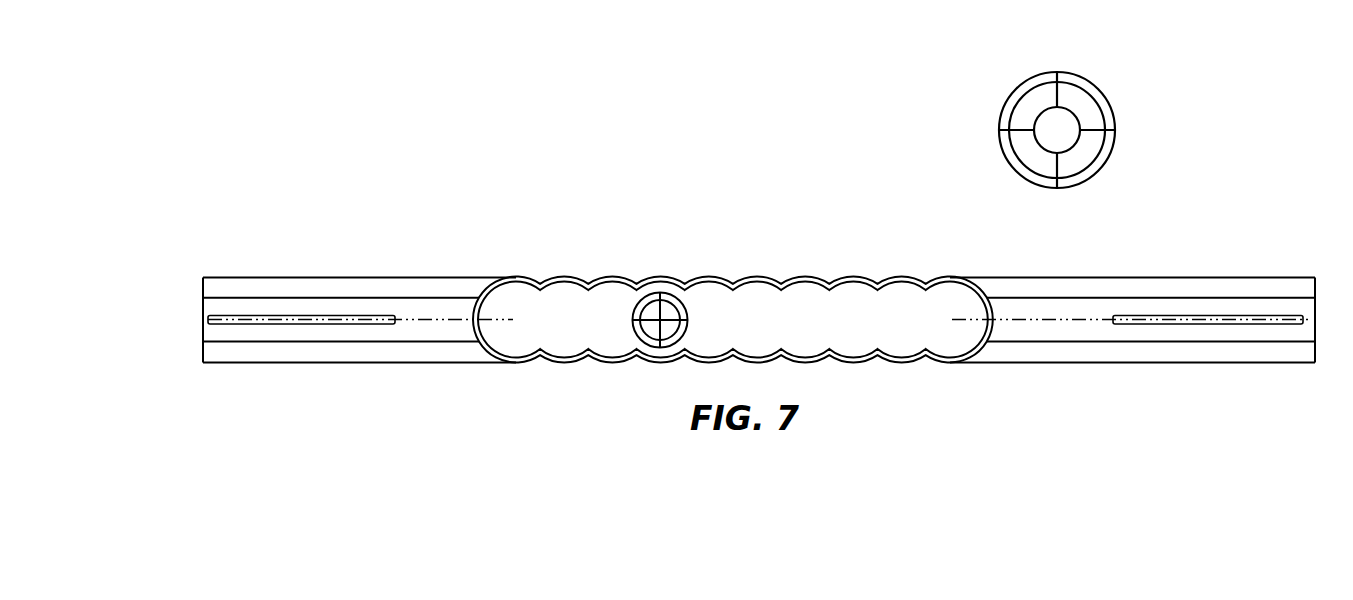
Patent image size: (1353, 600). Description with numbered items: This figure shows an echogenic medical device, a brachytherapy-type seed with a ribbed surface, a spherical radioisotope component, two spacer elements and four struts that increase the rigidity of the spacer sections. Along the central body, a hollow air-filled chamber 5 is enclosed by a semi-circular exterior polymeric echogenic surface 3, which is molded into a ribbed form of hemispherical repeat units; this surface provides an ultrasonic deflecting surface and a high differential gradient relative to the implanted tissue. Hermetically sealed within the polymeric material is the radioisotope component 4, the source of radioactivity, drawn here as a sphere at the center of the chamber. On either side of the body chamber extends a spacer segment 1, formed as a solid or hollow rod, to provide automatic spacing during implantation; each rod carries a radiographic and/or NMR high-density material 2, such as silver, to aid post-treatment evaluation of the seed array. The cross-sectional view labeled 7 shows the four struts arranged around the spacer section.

The spacer segment 1 is at (268, 298).
The radiographic and/or NMR high-density material 2 is at (355, 315).
The echogenic surface 3 is at (563, 276).
The radioisotope component 4 is at (653, 292).
The hollow gas-filled chamber 5 is at (807, 295).
The end cap 7 is at (1090, 82).